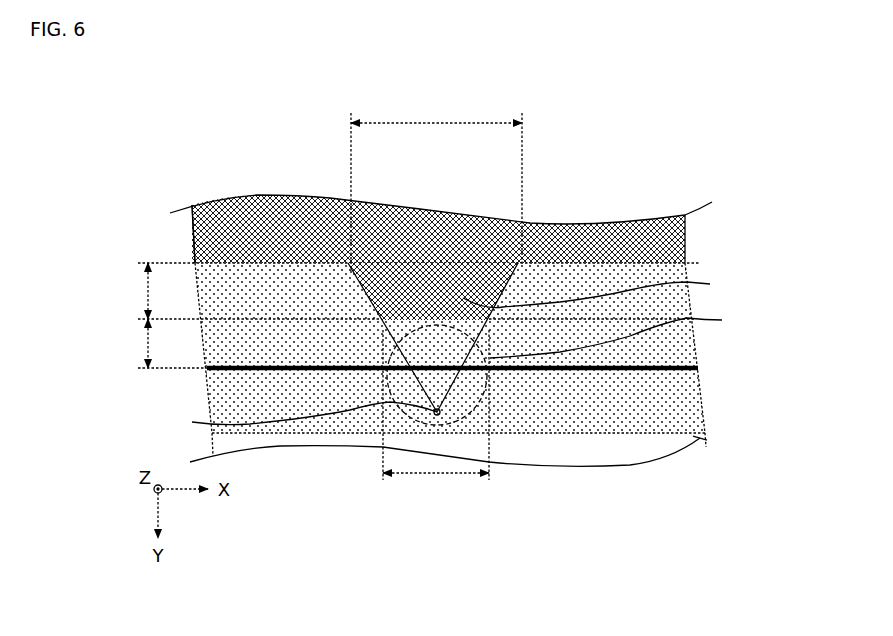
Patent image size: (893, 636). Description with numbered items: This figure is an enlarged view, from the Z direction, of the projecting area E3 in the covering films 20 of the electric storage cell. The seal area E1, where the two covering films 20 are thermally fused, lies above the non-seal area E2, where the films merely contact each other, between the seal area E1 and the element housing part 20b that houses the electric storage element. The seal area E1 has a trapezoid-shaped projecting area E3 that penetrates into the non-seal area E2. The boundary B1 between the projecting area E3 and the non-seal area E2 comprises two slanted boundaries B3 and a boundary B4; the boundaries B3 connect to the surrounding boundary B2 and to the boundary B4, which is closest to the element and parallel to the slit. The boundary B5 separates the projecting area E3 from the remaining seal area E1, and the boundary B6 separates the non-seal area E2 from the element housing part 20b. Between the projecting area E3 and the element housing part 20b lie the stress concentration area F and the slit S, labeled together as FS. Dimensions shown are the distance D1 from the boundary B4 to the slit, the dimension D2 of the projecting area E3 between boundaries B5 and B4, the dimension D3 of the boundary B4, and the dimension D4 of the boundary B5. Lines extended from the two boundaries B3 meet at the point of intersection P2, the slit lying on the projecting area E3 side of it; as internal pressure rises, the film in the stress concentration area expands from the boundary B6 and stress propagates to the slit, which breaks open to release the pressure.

The covering film 20 is at (701, 181).
The element housing part 20b is at (702, 438).
The boundary B1 is at (367, 178).
The boundary B2 is at (593, 262).
The boundary B3 is at (390, 275).
The boundary B4 is at (432, 322).
The boundary B5 is at (521, 272).
The boundary B6 is at (682, 427).
The distance D1 is at (148, 347).
The dimension D2 is at (148, 292).
The dimension D3 is at (437, 478).
The dimension D4 is at (437, 120).
The seal area E1 is at (200, 236).
The non-seal area E2 is at (213, 393).
The projecting area E3 is at (600, 292).
The stress concentration area and slit FS is at (657, 353).
The point of intersection P2 is at (301, 417).